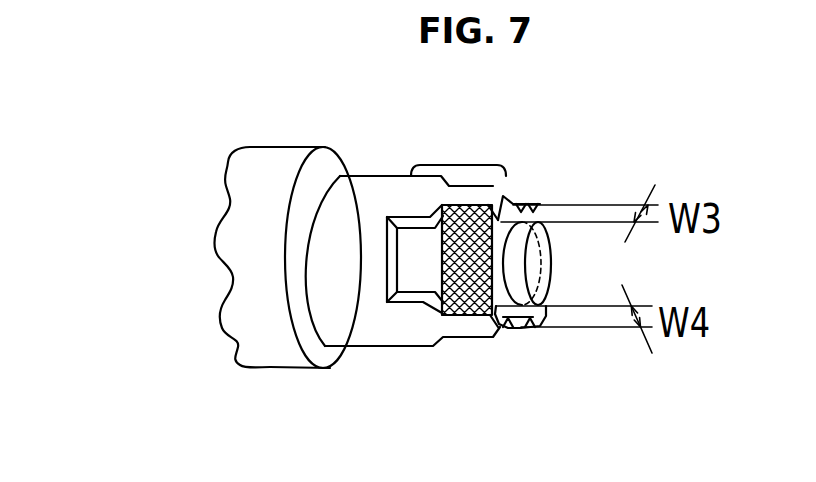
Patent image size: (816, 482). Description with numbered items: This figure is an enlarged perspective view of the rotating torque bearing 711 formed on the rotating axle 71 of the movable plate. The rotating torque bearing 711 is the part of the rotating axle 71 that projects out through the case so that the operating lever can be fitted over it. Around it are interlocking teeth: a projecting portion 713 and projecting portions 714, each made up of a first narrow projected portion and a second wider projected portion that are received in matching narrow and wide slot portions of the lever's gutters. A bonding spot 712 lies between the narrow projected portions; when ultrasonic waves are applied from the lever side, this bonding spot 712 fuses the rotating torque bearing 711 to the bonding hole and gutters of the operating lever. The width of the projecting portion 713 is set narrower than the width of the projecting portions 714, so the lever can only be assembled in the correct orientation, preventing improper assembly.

The rotating axle 71 is at (337, 168).
The rotating torque bearing 711 is at (458, 167).
The bonding spot 712 is at (442, 270).
The projecting portion 713 is at (487, 194).
The projecting portions 714 is at (535, 203).